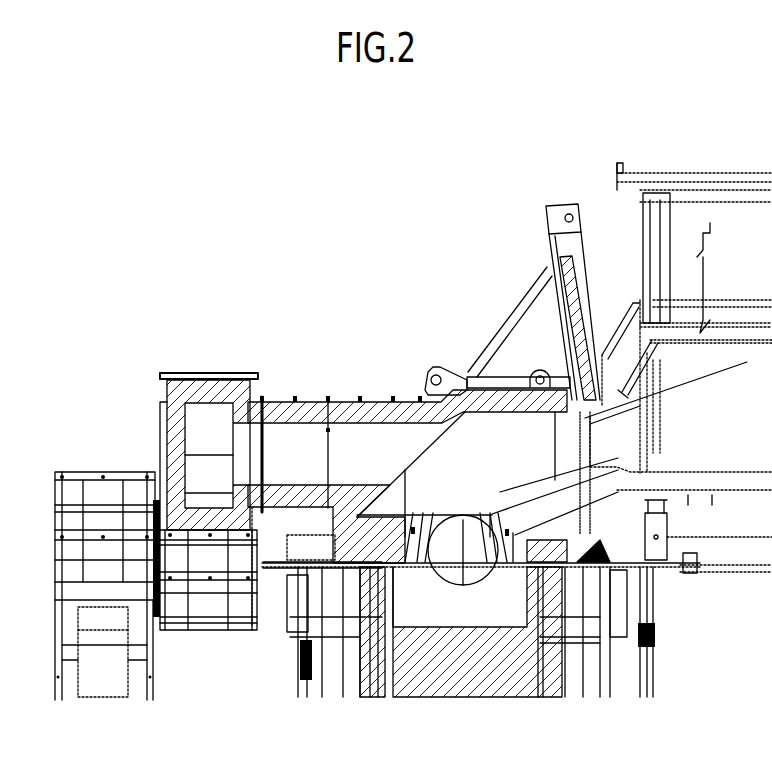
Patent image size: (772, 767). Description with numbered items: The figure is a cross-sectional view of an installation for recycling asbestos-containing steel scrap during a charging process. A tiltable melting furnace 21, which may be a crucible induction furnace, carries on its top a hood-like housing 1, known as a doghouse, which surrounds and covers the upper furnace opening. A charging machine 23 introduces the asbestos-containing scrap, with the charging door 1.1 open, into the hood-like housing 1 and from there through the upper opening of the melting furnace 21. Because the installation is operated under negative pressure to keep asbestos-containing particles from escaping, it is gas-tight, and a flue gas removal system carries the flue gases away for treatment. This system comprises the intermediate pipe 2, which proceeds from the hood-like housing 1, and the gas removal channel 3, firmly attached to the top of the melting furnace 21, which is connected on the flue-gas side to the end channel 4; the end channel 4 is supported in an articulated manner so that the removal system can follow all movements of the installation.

The hood-like housing 1 is at (452, 465).
The charging door 1.1 is at (560, 287).
The intermediate pipe 2 is at (300, 410).
The gas removal channel 3 is at (212, 393).
The end channel 4 is at (112, 495).
The melting furnace 21 is at (481, 630).
The charging machine 23 is at (677, 510).